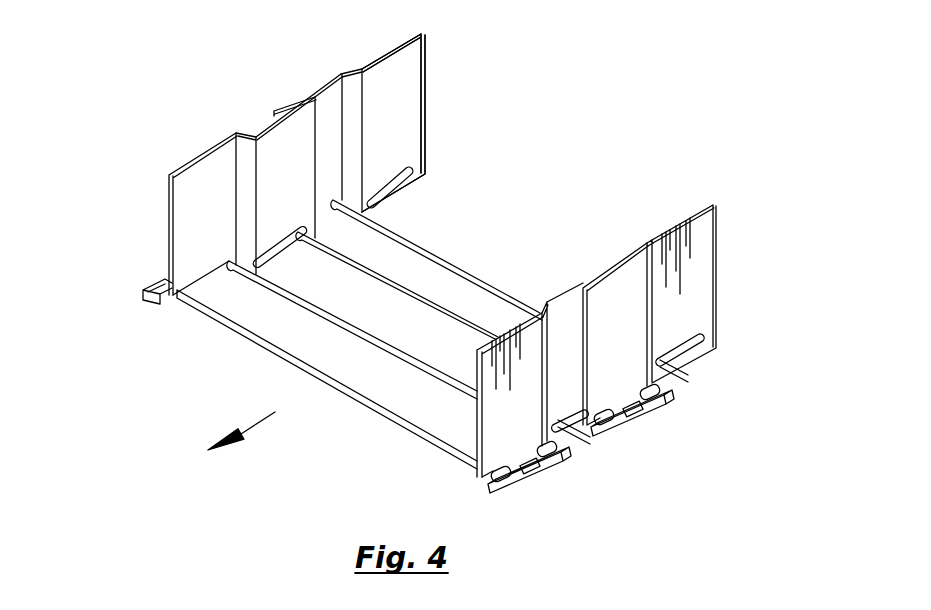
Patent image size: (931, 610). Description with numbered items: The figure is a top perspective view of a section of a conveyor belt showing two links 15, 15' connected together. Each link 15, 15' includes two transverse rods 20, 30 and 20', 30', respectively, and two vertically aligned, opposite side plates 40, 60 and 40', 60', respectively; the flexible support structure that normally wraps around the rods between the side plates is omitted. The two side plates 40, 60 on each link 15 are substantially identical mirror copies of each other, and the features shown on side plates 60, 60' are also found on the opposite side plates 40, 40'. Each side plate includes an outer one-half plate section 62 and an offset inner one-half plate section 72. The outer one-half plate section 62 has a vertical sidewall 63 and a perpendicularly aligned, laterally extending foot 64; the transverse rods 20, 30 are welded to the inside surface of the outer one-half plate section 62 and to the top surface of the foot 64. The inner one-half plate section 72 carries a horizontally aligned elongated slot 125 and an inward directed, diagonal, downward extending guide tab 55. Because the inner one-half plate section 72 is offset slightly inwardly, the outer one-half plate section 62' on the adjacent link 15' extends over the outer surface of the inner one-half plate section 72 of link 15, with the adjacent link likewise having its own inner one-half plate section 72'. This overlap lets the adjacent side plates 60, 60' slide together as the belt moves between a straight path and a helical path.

The link 15 is at (199, 196).
The adjacent link 15' is at (357, 113).
The side plate 40 is at (213, 192).
The side plate 40' is at (300, 131).
The outer one-half plate section 62 is at (379, 360).
The outer one-half plate section 62' is at (364, 111).
The inner one-half plate section 72 is at (538, 325).
The inner one-half plate section 72' is at (432, 123).
The elongated slot 125 is at (405, 184).
The guide tab 55 is at (397, 195).
The transverse rod 30 is at (352, 330).
The transverse rod 30' is at (436, 260).
The transverse rod 20 is at (327, 379).
The transverse rod 20' is at (397, 286).
The vertical sidewall 63 is at (203, 265).
The foot 64 is at (146, 295).
The side plate 60 is at (548, 484).
The side plate 60' is at (676, 415).